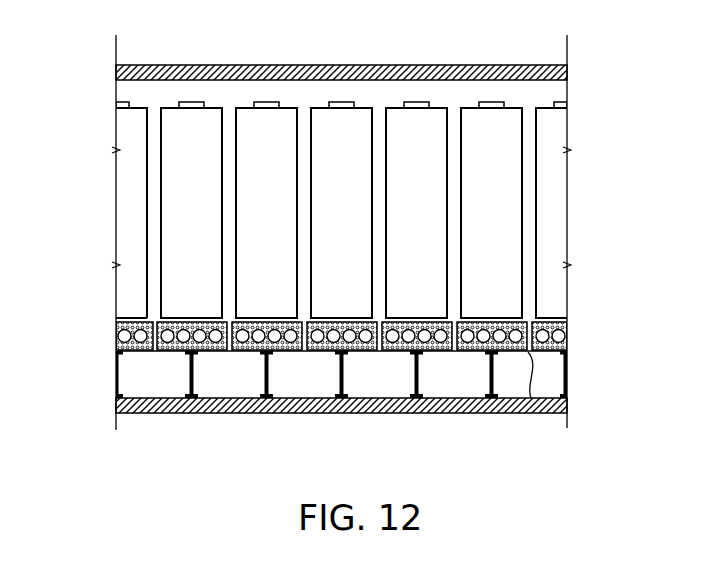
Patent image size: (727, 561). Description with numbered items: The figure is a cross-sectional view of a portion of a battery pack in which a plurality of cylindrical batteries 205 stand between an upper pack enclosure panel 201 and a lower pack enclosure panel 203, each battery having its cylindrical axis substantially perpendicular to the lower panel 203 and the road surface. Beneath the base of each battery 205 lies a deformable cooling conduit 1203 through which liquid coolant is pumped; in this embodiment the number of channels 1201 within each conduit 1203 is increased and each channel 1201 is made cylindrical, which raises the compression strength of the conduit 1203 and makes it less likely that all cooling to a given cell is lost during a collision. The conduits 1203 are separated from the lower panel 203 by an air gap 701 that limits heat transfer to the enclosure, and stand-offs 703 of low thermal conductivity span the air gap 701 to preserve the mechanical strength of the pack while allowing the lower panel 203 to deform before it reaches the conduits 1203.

The upper pack enclosure panel 201 is at (238, 64).
The batteries 205 is at (513, 218).
The channels 1201 is at (291, 345).
The conduit 1203 is at (217, 353).
The stand-offs 703 is at (419, 377).
The air gap 701 is at (545, 370).
The lower pack enclosure panel 203 is at (197, 413).